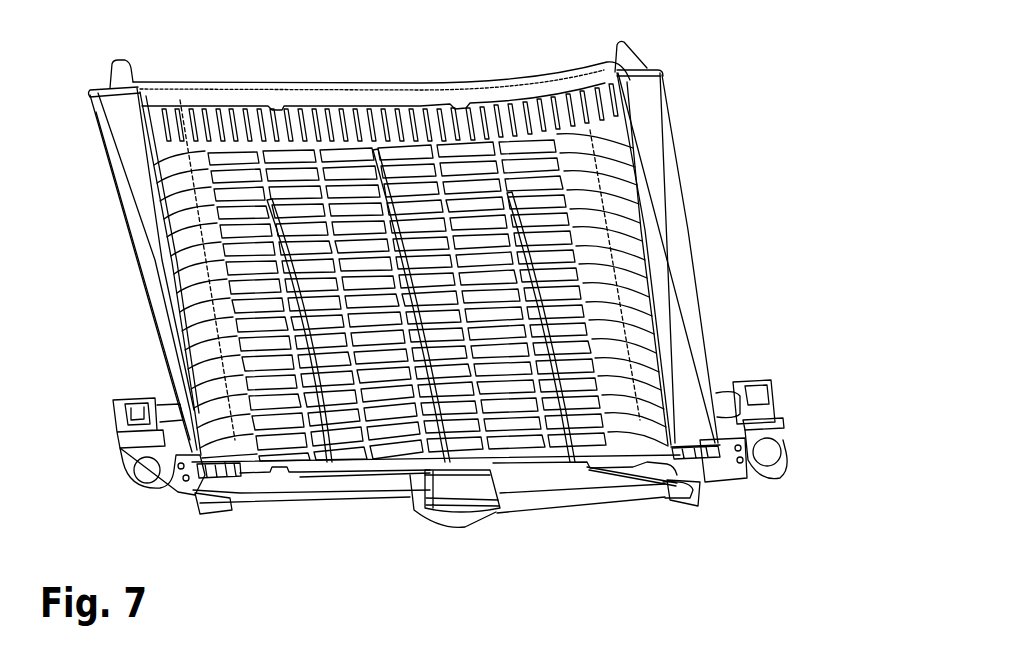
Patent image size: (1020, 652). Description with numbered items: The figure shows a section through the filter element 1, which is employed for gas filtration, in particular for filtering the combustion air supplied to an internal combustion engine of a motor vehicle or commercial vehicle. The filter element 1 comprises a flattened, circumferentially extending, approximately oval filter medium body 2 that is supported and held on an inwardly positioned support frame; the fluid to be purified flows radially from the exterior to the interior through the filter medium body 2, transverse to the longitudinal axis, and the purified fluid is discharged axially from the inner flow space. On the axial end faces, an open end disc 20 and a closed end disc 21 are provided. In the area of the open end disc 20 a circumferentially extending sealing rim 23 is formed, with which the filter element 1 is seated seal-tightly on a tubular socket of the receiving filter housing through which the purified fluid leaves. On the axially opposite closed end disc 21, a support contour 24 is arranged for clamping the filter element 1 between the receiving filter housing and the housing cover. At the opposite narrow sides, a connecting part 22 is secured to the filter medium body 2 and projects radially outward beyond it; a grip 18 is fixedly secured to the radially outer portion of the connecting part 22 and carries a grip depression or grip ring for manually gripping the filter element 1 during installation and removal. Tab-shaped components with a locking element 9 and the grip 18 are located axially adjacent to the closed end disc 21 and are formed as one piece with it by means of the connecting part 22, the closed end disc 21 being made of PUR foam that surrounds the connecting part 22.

The filter element 1 is at (443, 290).
The filter medium body 2 is at (650, 138).
The locking element 9 is at (133, 413).
The grip 18 is at (146, 470).
The open end disc 20 is at (500, 100).
The closed end disc 21 is at (578, 478).
The connecting part 22 is at (237, 482).
The sealing rim 23 is at (622, 55).
The support contour 24 is at (503, 483).